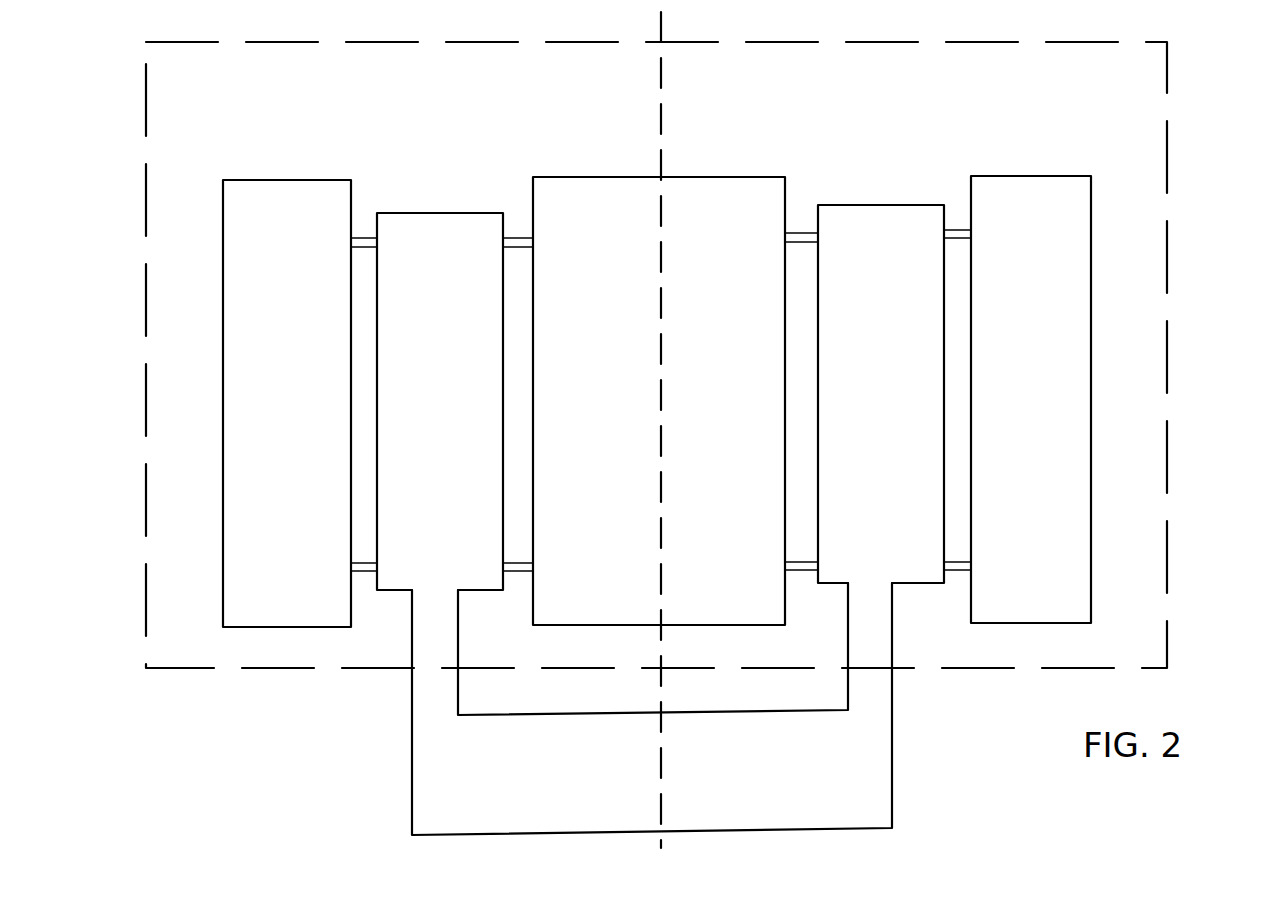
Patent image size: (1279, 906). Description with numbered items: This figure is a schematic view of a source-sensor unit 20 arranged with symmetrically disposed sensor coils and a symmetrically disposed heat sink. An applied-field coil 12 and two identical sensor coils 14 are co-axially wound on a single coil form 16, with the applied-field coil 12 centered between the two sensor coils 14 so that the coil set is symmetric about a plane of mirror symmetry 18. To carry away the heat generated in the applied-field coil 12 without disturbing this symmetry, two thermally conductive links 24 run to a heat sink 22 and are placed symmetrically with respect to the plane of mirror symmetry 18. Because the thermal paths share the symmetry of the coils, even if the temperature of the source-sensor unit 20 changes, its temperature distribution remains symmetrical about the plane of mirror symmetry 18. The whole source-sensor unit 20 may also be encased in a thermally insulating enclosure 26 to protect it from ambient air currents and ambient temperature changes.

The applied-field coil 12 is at (760, 185).
The sensor coils 14 is at (320, 188).
The coil form 16 is at (358, 242).
The plane of mirror symmetry 18 is at (664, 84).
The source-sensor unit 20 is at (955, 122).
The heat sink 22 is at (810, 750).
The thermally conductive links 24 is at (408, 627).
The thermally insulating enclosure 26 is at (1168, 230).